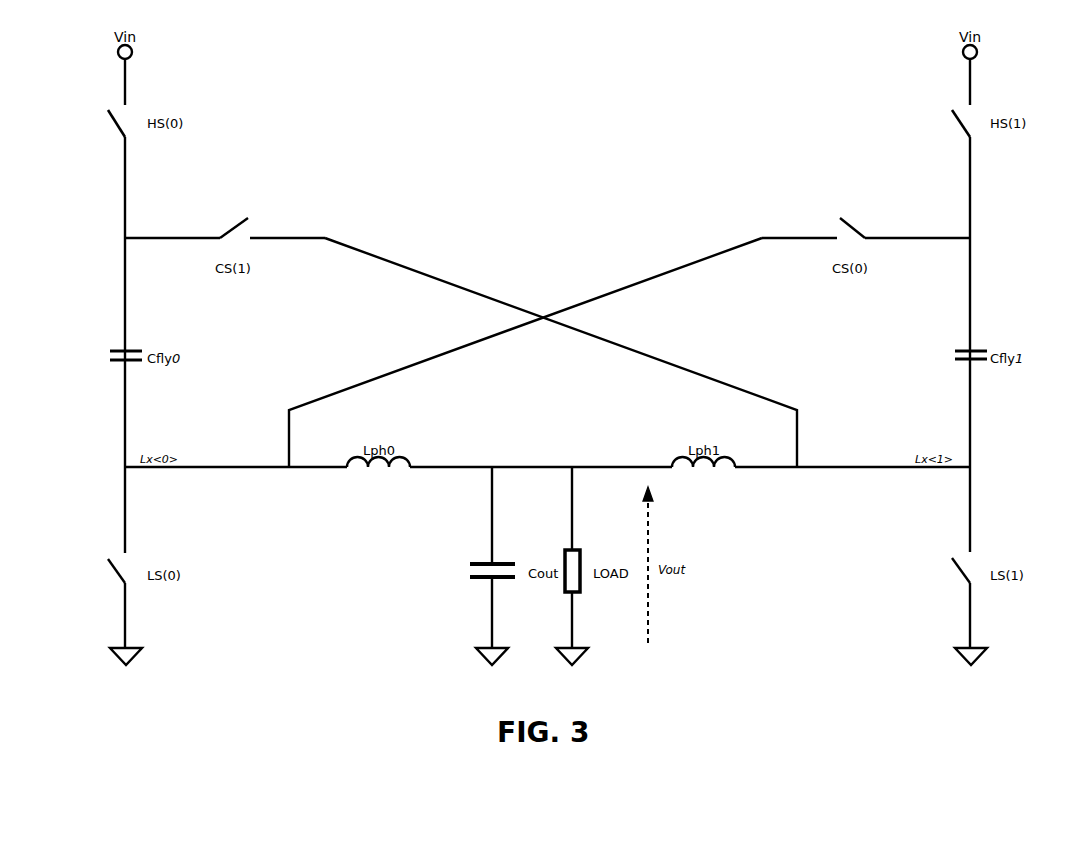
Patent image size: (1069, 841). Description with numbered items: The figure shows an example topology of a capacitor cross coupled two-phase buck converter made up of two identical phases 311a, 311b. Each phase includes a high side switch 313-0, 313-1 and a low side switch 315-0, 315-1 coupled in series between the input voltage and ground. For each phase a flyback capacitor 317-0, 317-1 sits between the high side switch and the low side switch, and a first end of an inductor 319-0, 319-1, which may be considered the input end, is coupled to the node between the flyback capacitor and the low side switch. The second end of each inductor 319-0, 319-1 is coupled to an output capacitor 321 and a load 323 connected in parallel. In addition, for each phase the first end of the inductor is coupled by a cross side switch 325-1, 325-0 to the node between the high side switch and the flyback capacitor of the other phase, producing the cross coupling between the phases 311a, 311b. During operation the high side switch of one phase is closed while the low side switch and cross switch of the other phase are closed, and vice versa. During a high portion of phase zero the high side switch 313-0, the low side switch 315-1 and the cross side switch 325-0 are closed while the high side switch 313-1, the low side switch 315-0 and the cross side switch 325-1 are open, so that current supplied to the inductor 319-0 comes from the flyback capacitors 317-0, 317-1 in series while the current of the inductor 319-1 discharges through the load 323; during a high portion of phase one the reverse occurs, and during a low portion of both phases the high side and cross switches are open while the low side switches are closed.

The phase 311a is at (280, 128).
The phase 311b is at (714, 144).
The high side switch HS(0) 313-0 is at (113, 122).
The high side switch HS(1) 313-1 is at (955, 119).
The low side switch LS(0) 315-0 is at (112, 571).
The low side switch LS(1) 315-1 is at (955, 571).
The flyback capacitor Cfly0 317-0 is at (115, 361).
The flyback capacitor Cfly1 317-1 is at (978, 362).
The inductor Lph0 319-0 is at (372, 470).
The inductor Lph1 319-1 is at (706, 468).
The output capacitor 321 is at (480, 580).
The load 323 is at (580, 593).
The cross side switch CS(0) 325-0 is at (858, 230).
The cross side switch CS(1) 325-1 is at (236, 224).